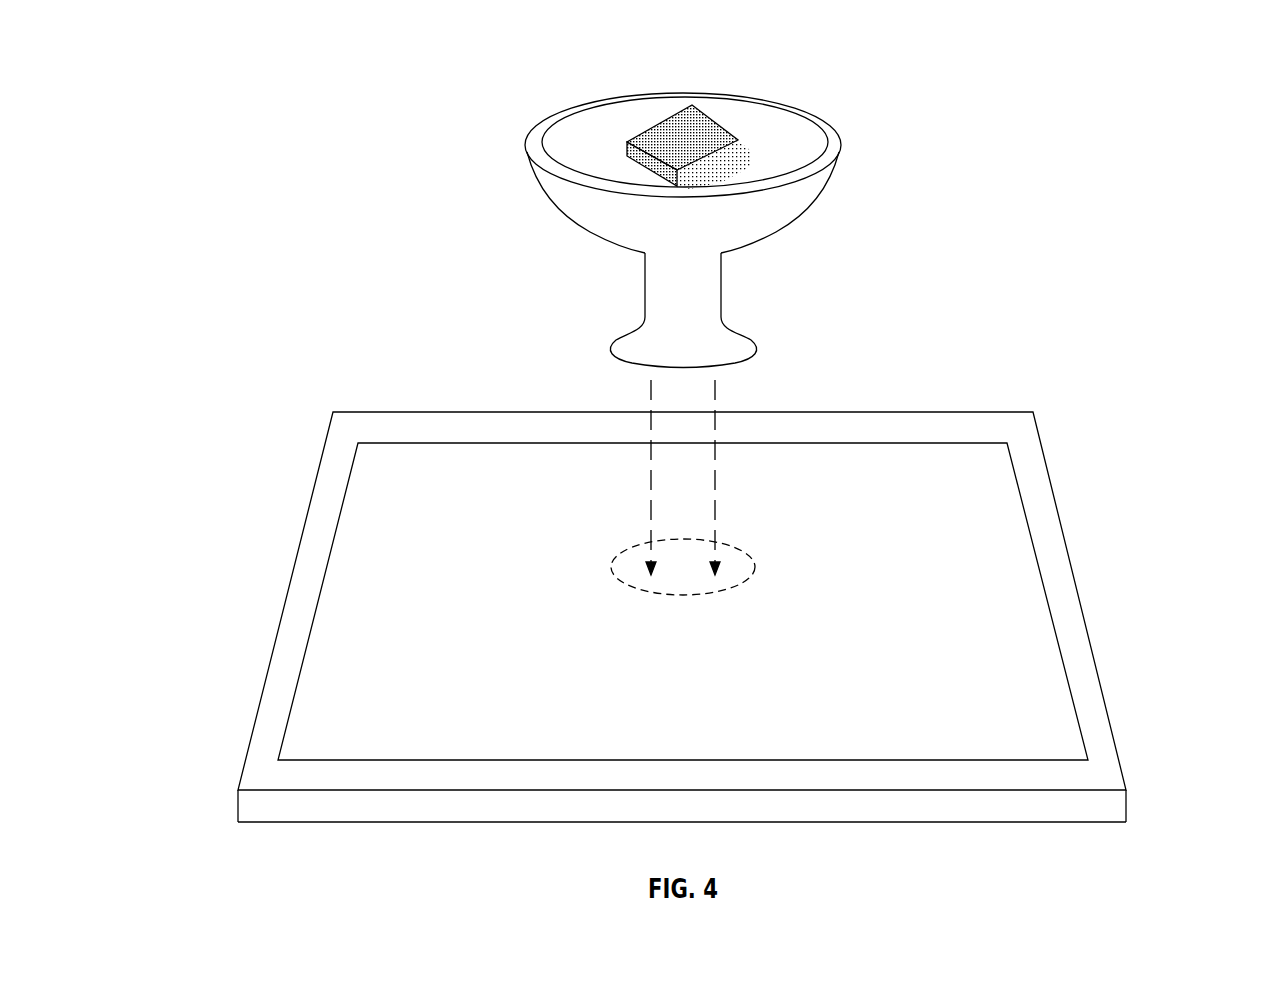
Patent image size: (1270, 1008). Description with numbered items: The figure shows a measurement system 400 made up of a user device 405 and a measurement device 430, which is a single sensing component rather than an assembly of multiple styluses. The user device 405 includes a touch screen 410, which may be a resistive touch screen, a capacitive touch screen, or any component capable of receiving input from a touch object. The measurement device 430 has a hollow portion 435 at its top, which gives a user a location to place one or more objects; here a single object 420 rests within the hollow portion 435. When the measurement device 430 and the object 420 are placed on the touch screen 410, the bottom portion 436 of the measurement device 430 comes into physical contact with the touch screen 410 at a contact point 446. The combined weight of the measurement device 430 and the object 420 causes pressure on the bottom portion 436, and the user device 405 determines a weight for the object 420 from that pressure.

The measurement system 400 is at (1064, 112).
The user device 405 is at (1052, 486).
The touch screen 410 is at (1058, 648).
The object 420 is at (727, 127).
The measurement device 430 is at (605, 294).
The hollow portion 435 is at (560, 147).
The bottom portion 436 is at (952, 400).
The contact point 446 is at (612, 560).